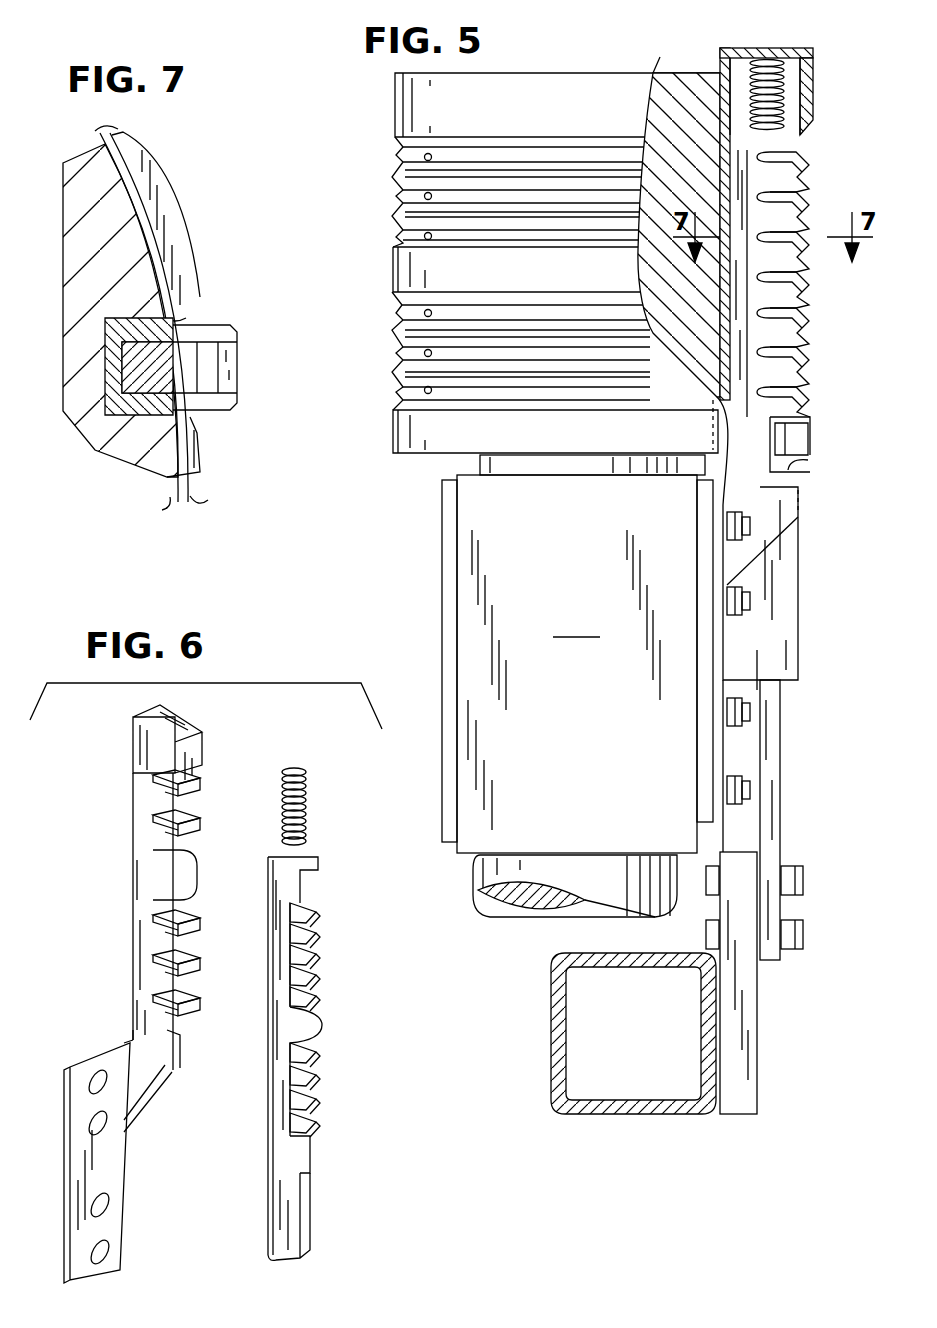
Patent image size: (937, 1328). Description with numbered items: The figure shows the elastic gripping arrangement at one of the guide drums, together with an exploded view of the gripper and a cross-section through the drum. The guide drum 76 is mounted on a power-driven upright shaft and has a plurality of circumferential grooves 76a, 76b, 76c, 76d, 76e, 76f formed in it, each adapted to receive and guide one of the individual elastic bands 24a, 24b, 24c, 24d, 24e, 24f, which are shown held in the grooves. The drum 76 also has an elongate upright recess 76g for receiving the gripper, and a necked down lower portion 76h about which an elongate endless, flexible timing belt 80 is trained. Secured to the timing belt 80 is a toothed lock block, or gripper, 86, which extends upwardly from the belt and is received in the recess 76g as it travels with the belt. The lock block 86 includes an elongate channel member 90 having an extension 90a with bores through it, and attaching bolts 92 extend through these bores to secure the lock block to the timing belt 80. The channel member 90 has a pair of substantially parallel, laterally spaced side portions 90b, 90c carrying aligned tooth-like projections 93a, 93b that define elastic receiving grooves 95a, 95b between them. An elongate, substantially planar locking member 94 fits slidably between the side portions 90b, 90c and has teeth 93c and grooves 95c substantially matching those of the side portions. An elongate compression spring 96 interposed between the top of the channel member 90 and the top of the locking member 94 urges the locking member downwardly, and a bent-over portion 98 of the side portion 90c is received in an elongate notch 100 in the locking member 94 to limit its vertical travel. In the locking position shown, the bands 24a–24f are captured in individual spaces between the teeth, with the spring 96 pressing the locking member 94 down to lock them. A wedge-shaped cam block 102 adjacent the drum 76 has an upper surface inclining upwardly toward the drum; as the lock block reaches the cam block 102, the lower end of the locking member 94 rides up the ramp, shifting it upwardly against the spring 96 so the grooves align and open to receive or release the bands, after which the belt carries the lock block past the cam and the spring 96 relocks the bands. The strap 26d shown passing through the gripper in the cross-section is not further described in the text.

In FIG. 5, the elastic band 24a is at (431, 390).
In FIG. 5, the elastic band 24b is at (431, 351).
In FIG. 5, the elastic band 24c is at (431, 311).
In FIG. 5, the elastic band 24d is at (431, 234).
In FIG. 5, the elastic band 24e is at (431, 194).
In FIG. 5, the elastic band 24f is at (428, 153).
In FIG. 7, the strap 26d is at (192, 502).
In FIG. 7, the guide drum 76 is at (174, 196).
In FIG. 5, the circumferential groove 76a is at (408, 391).
In FIG. 5, the circumferential groove 76b is at (408, 354).
In FIG. 5, the circumferential groove 76c is at (408, 314).
In FIG. 5, the circumferential groove 76d is at (408, 237).
In FIG. 5, the circumferential groove 76e is at (408, 197).
In FIG. 5, the circumferential groove 76f is at (408, 156).
In FIG. 7, the upright recess 76g is at (145, 318).
In FIG. 5, the necked down lower portion 76h is at (577, 664).
In FIG. 5, the timing belt 80 is at (703, 748).
In FIG. 5, the lock block 86 is at (826, 83).
In FIG. 7, the lock block 86 is at (243, 322).
In FIG. 6, the lock block 86 is at (104, 803).
In FIG. 6, the channel member 90 is at (133, 868).
In FIG. 5, the extension 90a is at (727, 650).
In FIG. 6, the extension 90a is at (70, 1128).
In FIG. 6, the side portion 90b is at (160, 893).
In FIG. 6, the side portion 90c is at (190, 790).
In FIG. 5, the attaching bolt 92 is at (750, 601).
In FIG. 6, the tooth-like projection 93a is at (160, 795).
In FIG. 5, the tooth-like projection 93b is at (808, 210).
In FIG. 6, the tooth-like projection 93b is at (200, 788).
In FIG. 5, the tooth 93c is at (772, 355).
In FIG. 6, the tooth 93c is at (312, 933).
In FIG. 5, the locking member 94 is at (821, 311).
In FIG. 6, the locking member 94 is at (305, 1058).
In FIG. 6, the elastic receiving groove 95a is at (153, 775).
In FIG. 6, the elastic receiving groove 95b is at (190, 776).
In FIG. 6, the groove 95c is at (312, 912).
In FIG. 5, the compression spring 96 is at (775, 127).
In FIG. 6, the compression spring 96 is at (306, 815).
In FIG. 5, the bent-over portion 98 is at (796, 440).
In FIG. 6, the bent-over portion 98 is at (180, 1042).
In FIG. 5, the elongate notch 100 is at (796, 470).
In FIG. 6, the elongate notch 100 is at (302, 1166).
In FIG. 5, the cam block 102 is at (775, 821).